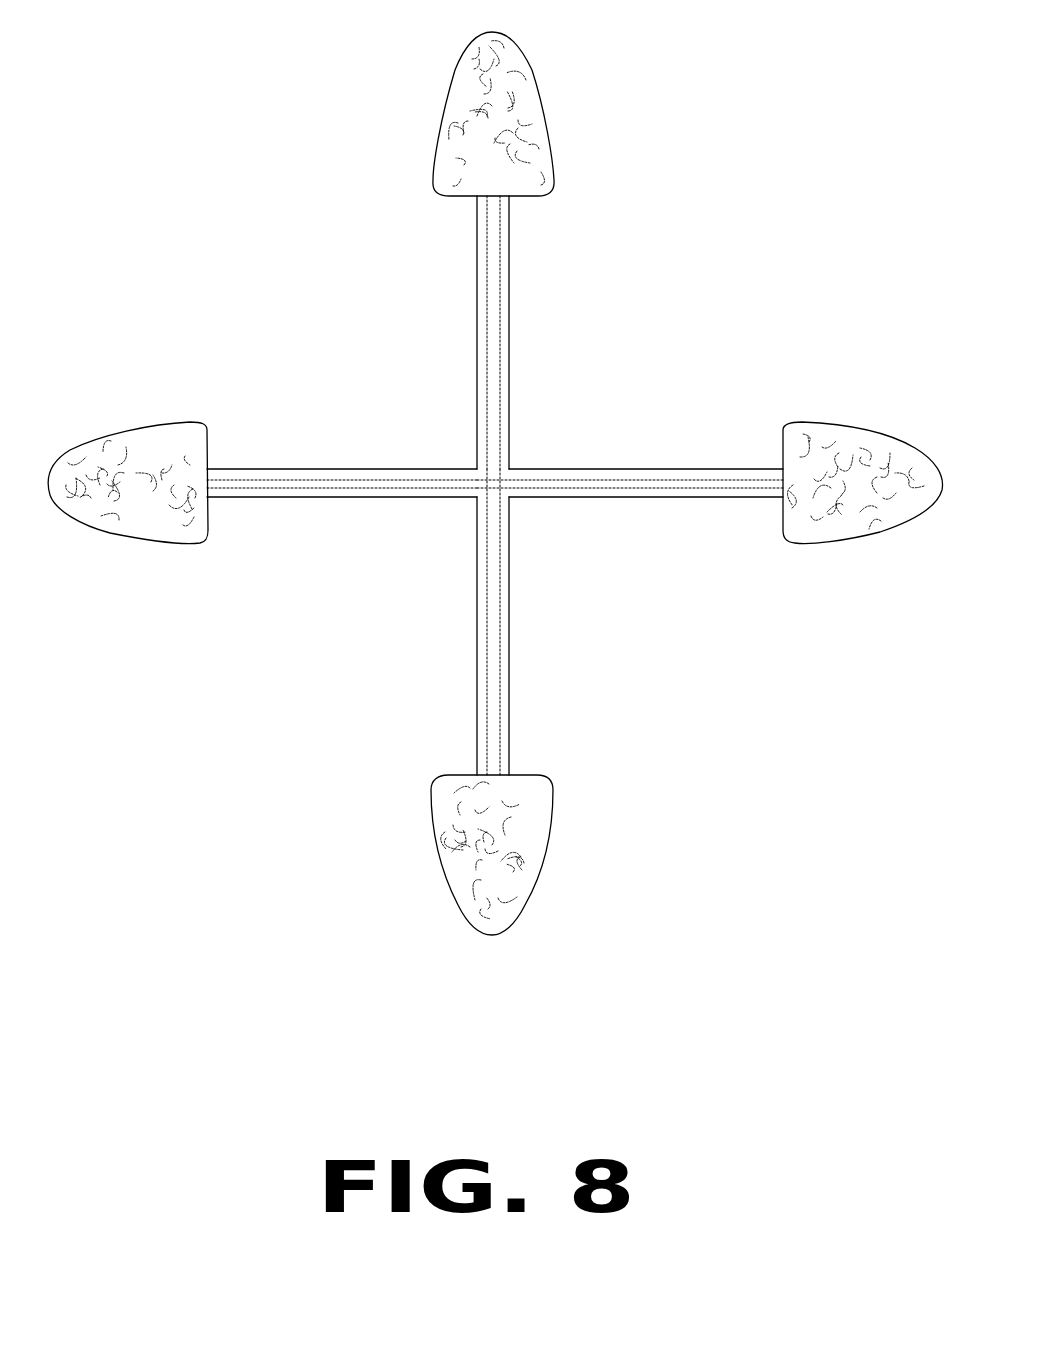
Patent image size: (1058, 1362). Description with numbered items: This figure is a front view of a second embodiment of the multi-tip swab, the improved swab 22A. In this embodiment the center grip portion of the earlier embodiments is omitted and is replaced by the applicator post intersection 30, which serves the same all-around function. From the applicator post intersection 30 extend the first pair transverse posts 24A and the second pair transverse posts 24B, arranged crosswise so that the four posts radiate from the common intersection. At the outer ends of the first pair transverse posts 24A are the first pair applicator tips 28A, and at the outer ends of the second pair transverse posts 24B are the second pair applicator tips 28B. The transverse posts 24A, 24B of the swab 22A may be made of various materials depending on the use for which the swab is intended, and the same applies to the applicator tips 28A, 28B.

The improved swab 22A is at (255, 255).
The 1st pair transverse posts 24A is at (478, 329).
The 2nd pair transverse posts 24B is at (327, 482).
The 1st pair applicator tips 28A is at (500, 63).
The 2nd pair applicator tips 28B is at (98, 498).
The applicator post intersection 30 is at (520, 452).